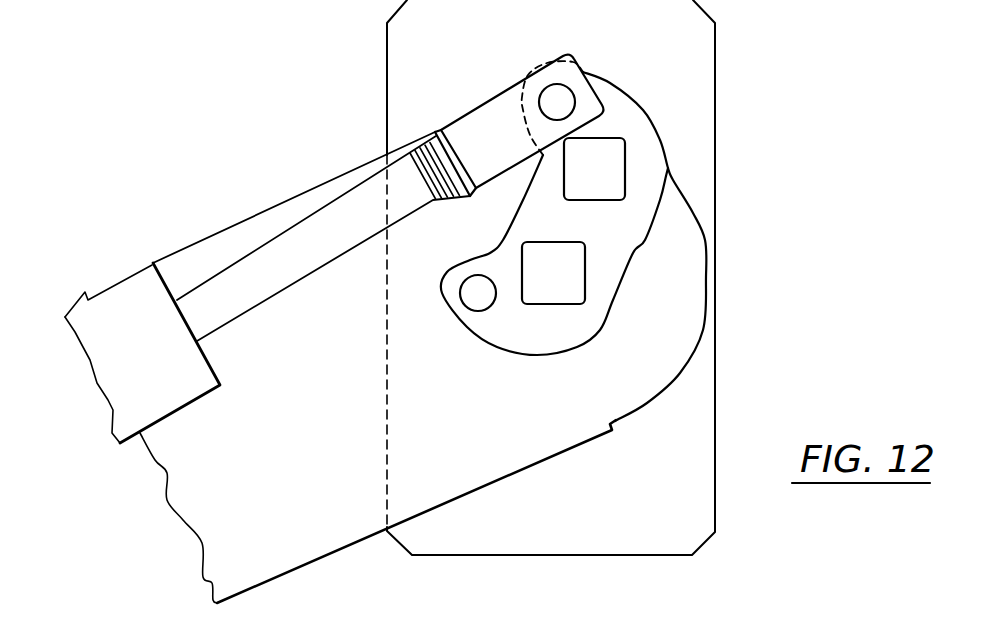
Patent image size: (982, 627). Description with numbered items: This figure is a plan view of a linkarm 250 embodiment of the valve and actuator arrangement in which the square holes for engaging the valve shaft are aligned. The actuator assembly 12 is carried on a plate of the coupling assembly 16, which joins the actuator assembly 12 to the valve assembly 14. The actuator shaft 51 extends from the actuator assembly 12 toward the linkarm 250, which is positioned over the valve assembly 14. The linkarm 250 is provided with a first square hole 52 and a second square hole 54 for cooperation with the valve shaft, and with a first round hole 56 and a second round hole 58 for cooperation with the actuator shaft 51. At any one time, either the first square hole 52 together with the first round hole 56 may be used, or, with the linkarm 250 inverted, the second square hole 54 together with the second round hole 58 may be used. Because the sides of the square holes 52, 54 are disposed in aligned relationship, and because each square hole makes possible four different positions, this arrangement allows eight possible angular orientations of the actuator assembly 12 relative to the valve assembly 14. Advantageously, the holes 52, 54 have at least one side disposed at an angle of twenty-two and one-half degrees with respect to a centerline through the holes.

The actuator assembly 12 is at (212, 365).
The valve assembly 14 is at (717, 322).
The coupling assembly 16 is at (326, 556).
The actuator shaft 51 is at (294, 288).
The first square hole 52 is at (605, 147).
The second square hole 54 is at (560, 300).
The first round hole 56 is at (481, 309).
The second round hole 58 is at (558, 86).
The linkarm 250 is at (536, 356).